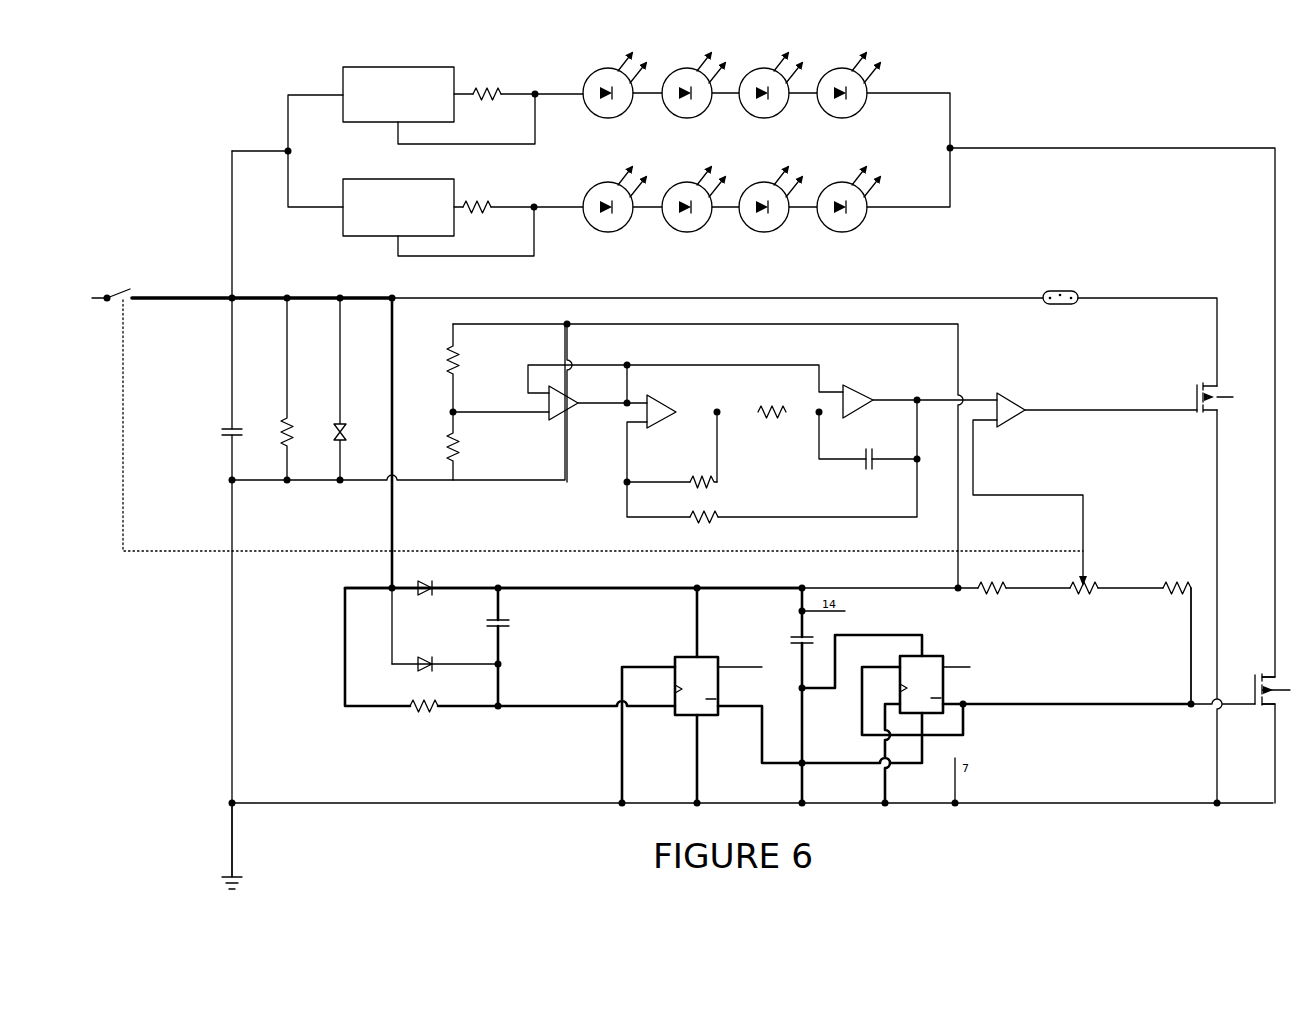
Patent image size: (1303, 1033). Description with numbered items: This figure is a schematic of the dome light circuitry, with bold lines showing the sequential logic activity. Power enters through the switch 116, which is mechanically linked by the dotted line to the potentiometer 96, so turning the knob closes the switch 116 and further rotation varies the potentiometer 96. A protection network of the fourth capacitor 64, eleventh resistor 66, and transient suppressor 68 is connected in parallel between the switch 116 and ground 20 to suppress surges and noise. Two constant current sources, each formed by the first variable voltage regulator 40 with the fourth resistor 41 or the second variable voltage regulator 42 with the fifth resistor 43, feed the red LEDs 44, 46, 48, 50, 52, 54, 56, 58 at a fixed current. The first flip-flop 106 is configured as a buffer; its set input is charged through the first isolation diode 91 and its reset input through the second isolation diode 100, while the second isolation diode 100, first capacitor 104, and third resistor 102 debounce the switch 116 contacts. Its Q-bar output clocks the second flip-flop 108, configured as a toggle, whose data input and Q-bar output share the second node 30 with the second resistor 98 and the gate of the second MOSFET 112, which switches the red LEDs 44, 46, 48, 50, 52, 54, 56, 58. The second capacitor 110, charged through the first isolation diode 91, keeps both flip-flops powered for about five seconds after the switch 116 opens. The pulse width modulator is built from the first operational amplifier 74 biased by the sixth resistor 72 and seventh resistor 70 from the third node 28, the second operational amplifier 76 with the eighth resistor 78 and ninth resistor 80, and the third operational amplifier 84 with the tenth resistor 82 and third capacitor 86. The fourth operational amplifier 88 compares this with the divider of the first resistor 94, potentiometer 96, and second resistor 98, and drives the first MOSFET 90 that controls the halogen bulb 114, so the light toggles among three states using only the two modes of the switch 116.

The ground 20 is at (240, 870).
The third node 28 is at (582, 587).
The second node 30 is at (1177, 699).
The first variable voltage regulator 40 is at (343, 82).
The fourth resistor 41 is at (497, 88).
The second variable voltage regulator 42 is at (403, 179).
The fifth resistor 43 is at (487, 201).
The red LED 44 is at (608, 118).
The red LED 46 is at (608, 232).
The red LED 48 is at (687, 118).
The red LED 50 is at (687, 232).
The red LED 52 is at (764, 118).
The red LED 54 is at (764, 232).
The red LED 56 is at (842, 118).
The red LED 58 is at (842, 232).
The fourth capacitor 64 is at (222, 432).
The eleventh resistor 66 is at (281, 432).
The transient suppressor 68 is at (333, 432).
The seventh resistor 70 is at (447, 360).
The sixth resistor 72 is at (447, 448).
The first operational amplifier 74 is at (553, 425).
The second operational amplifier 76 is at (647, 430).
The eighth resistor 78 is at (700, 491).
The ninth resistor 80 is at (700, 530).
The tenth resistor 82 is at (778, 420).
The third operational amplifier 84 is at (852, 383).
The third capacitor 86 is at (865, 470).
The fourth operational amplifier 88 is at (1015, 428).
The first MOSFET 90 is at (1197, 397).
The first isolation diode 91 is at (423, 586).
The first resistor 94 is at (1000, 582).
The potentiometer 96 is at (1078, 578).
The second resistor 98 is at (1176, 580).
The second isolation diode 100 is at (425, 660).
The third resistor 102 is at (428, 700).
The first capacitor 104 is at (505, 624).
The first flip-flop 106 is at (688, 655).
The second flip-flop 108 is at (932, 655).
The second capacitor 110 is at (785, 640).
The second MOSFET 112 is at (1252, 690).
The halogen bulb 114 is at (1061, 290).
The switch 116 is at (126, 291).